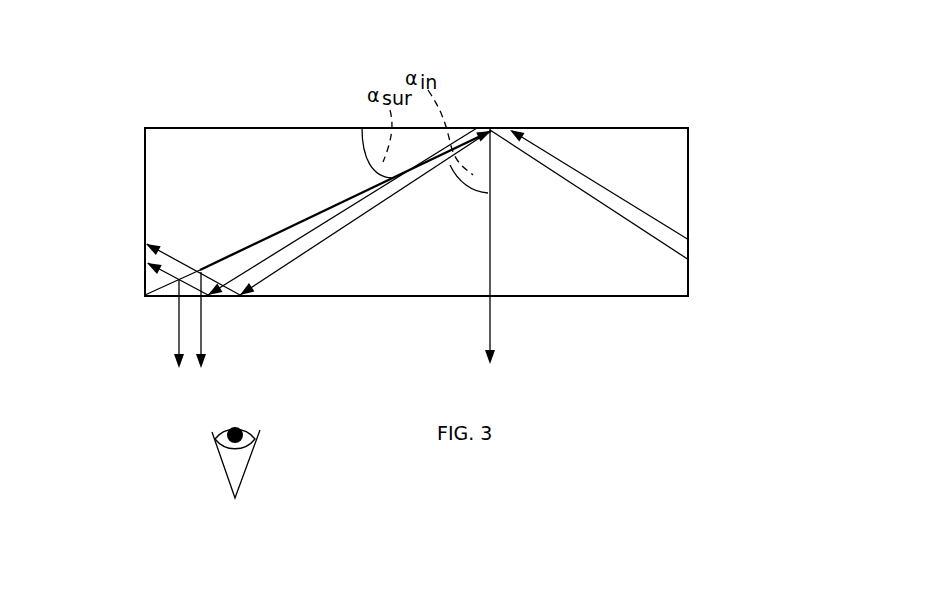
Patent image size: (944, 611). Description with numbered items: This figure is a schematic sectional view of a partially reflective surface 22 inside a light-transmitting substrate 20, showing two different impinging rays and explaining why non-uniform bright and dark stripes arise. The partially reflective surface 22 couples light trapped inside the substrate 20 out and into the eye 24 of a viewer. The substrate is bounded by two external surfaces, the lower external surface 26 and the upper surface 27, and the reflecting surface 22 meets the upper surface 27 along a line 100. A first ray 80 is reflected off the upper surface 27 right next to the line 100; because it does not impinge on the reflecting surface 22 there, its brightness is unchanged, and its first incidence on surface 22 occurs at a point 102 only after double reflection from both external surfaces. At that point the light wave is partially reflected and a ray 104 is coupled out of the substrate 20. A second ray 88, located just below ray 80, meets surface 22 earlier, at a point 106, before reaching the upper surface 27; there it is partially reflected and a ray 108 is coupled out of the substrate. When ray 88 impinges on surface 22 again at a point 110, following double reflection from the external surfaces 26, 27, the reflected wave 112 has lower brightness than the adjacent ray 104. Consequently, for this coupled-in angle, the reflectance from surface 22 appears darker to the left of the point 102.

The substrate 20 is at (643, 140).
The partially reflective surface 22 is at (303, 220).
The eye 24 is at (248, 463).
The external surface 26 is at (387, 300).
The upper surface 27 is at (593, 127).
The ray 80 is at (676, 224).
The ray 88 is at (690, 256).
The line 100 is at (507, 127).
The point 102 is at (199, 268).
The ray 104 is at (202, 332).
The point 106 is at (492, 124).
The ray 108 is at (495, 313).
The point 110 is at (178, 278).
The reflected wave 112 is at (176, 313).